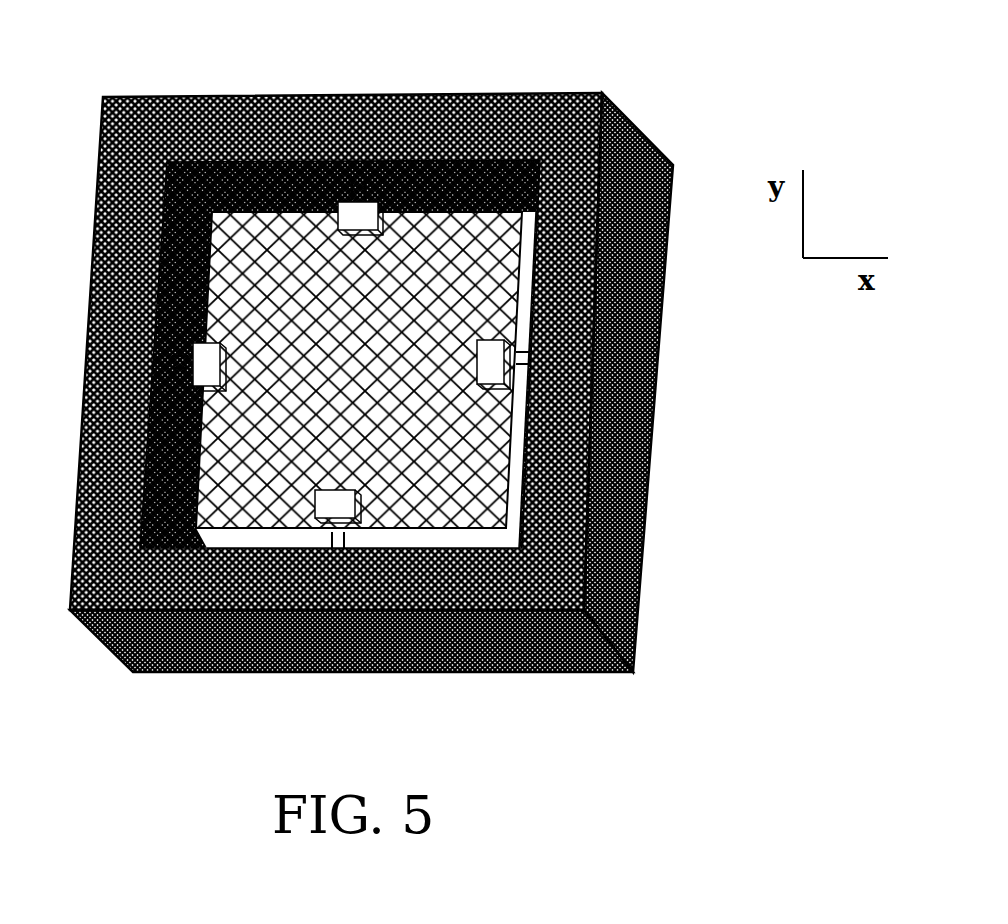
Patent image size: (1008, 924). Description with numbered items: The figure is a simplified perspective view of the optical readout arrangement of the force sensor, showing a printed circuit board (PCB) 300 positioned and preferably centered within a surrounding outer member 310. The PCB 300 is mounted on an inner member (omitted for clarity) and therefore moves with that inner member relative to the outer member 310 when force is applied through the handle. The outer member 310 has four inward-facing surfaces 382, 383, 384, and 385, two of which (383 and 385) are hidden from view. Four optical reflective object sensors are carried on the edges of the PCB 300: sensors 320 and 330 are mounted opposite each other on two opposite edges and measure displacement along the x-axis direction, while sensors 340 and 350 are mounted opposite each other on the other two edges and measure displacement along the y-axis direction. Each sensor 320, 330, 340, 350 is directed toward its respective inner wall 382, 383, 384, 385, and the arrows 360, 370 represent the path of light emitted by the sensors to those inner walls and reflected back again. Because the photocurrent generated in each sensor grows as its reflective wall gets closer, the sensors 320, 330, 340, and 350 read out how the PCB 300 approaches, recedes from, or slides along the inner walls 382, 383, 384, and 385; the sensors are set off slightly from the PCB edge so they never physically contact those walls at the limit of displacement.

The printed circuit board 300 is at (517, 243).
The outer member 310 is at (458, 672).
The optical sensor 320 is at (228, 367).
The optical sensor 330 is at (712, 603).
The optical sensor 340 is at (356, 225).
The optical sensor 350 is at (337, 503).
The arrow 360 is at (404, 177).
The arrow 370 is at (146, 319).
The inward-facing surface 382 is at (167, 243).
The inward-facing surface 383 is at (496, 491).
The inward-facing surface 384 is at (263, 172).
The inward-facing surface 385 is at (227, 530).